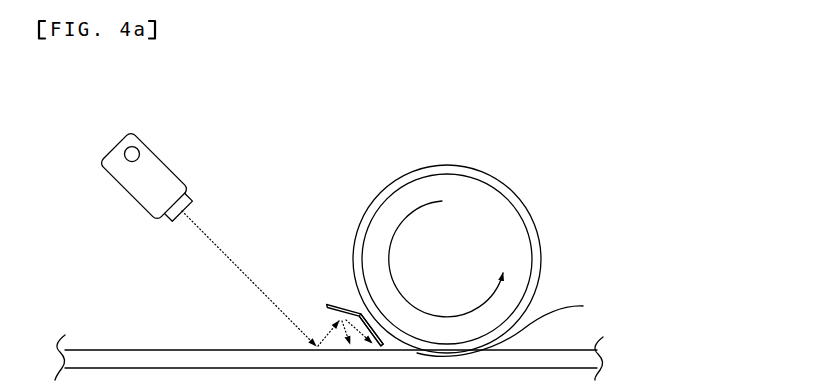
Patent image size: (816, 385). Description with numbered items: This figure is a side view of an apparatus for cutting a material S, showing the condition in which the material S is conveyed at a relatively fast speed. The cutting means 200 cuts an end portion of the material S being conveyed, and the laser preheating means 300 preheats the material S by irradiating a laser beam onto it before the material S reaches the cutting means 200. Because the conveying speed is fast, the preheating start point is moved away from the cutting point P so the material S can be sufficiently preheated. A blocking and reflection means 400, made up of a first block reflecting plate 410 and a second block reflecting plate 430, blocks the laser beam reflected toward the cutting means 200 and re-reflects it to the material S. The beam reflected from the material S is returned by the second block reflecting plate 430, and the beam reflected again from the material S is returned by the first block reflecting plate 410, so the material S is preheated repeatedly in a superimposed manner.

The laser preheating means 300 is at (170, 155).
The cutting means 200 is at (513, 187).
The blocking and reflection means 400 is at (347, 206).
The second block reflecting plate 430 is at (333, 305).
The first block reflecting plate 410 is at (376, 324).
The material S is at (108, 348).
The cutting point P is at (506, 326).